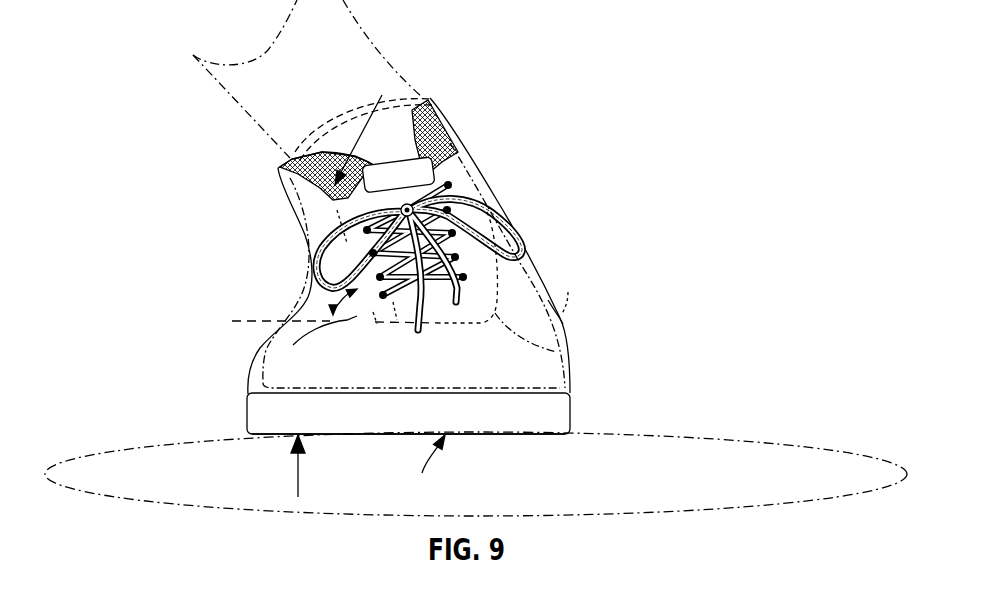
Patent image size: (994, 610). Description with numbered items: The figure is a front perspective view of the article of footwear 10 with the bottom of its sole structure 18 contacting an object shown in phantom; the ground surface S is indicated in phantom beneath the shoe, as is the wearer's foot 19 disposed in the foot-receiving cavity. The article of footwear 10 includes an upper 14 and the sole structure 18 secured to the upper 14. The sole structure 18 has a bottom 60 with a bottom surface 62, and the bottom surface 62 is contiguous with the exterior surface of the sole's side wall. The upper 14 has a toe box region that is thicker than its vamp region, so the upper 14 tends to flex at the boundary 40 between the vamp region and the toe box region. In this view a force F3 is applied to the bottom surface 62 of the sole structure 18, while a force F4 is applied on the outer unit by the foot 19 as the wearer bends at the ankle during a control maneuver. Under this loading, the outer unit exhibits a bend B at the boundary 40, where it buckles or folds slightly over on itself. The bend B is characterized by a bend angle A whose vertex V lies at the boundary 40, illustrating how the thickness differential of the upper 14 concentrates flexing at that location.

The article of footwear 10 is at (474, 294).
The upper 14 is at (526, 265).
The sole structure 18 is at (437, 443).
The foot 19 is at (566, 293).
The boundary 40 is at (567, 353).
The bottom 60 is at (495, 435).
The bottom surface 62 is at (428, 473).
The bend angle A is at (330, 285).
The bend B is at (357, 313).
The vertex V is at (354, 292).
The ground surface S is at (690, 430).
The force F3 is at (302, 473).
The force F4 is at (357, 135).